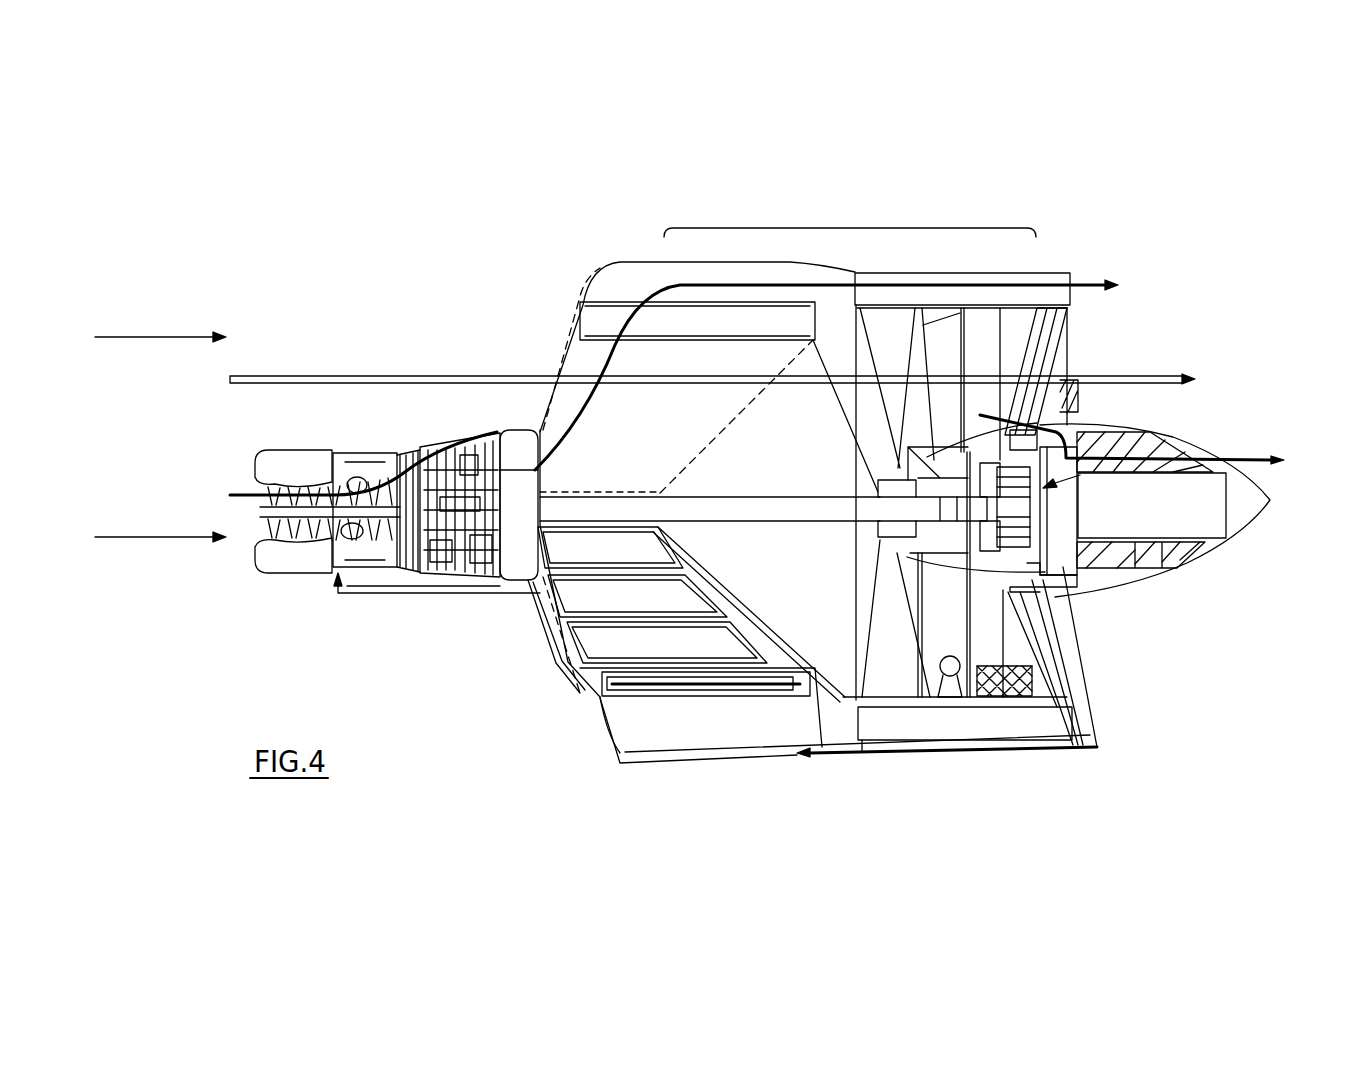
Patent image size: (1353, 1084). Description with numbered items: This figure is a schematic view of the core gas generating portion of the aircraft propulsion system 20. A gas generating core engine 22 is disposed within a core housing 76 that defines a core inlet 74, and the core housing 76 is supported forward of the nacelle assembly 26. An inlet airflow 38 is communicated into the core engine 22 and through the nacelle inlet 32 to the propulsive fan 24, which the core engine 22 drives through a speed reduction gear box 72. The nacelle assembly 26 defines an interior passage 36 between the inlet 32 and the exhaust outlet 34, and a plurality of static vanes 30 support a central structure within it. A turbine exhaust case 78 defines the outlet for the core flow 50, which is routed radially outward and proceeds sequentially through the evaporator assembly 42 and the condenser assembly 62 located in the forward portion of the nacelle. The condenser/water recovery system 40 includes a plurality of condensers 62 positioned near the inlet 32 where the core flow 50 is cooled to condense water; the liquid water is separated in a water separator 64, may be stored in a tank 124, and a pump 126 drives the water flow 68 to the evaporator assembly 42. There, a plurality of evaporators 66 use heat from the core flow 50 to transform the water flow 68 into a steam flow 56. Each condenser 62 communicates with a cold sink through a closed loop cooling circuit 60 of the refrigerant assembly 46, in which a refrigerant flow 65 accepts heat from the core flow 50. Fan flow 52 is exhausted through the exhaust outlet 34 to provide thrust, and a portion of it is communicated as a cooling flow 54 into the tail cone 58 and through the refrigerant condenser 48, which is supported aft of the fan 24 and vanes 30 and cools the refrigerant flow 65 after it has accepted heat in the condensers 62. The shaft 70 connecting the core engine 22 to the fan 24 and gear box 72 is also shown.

The propulsion system 20 is at (1092, 212).
The core engine 22 is at (345, 527).
The propulsive fan 24 is at (923, 603).
The nacelle assembly 26 is at (545, 275).
The static vanes 30 is at (1057, 347).
The inlet 32 is at (560, 352).
The exhaust outlet 34 is at (1080, 398).
The interior passage 36 is at (848, 340).
The inlet airflow 38 is at (150, 342).
The condenser/water recovery system 40 is at (850, 216).
The evaporator assembly 42 is at (526, 665).
The refrigerant assembly 46 is at (1200, 530).
The refrigerant condenser 48 is at (1113, 567).
The core gas flow 50 is at (578, 413).
The fan flow 52 is at (1143, 376).
The cooling flow 54 is at (1257, 457).
The steam flow 56 is at (395, 595).
The tail cone 58 is at (1247, 521).
The closed loop cooling circuit 60 is at (599, 715).
The condenser assembly 62 is at (605, 318).
The water separator 64 is at (937, 283).
The refrigerant flow 65 is at (913, 748).
The evaporators 66 is at (693, 420).
The water flow 68 is at (1063, 683).
The shaft 70 is at (765, 497).
The speed reduction gear box 72 is at (1105, 456).
The core inlet 74 is at (257, 537).
The core housing 76 is at (282, 463).
The turbine exhaust case 78 is at (508, 440).
The tank 124 is at (1060, 668).
The pump 126 is at (940, 665).